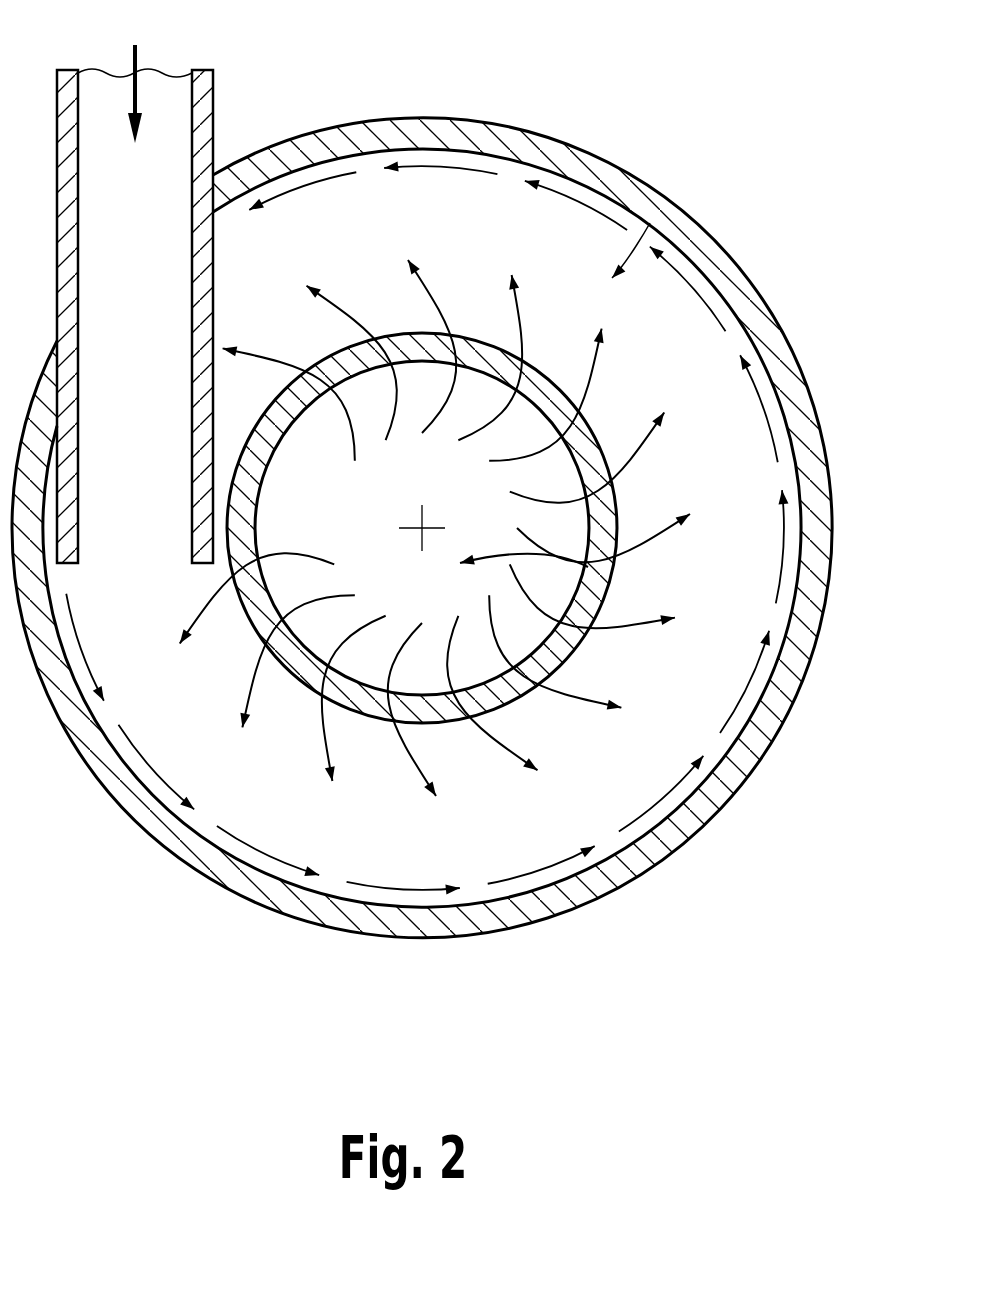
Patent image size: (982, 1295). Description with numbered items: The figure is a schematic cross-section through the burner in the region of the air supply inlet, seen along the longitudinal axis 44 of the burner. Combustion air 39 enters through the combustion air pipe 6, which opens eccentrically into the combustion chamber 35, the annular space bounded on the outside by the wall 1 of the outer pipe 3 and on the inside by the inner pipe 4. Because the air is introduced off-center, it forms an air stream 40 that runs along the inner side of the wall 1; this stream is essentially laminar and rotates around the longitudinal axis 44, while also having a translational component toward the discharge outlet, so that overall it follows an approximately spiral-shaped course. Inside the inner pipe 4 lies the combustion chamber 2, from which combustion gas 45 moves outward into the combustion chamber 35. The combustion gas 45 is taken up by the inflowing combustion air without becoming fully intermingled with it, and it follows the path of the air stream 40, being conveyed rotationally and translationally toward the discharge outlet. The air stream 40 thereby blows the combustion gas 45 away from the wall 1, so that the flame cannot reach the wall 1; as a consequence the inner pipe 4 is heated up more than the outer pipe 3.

The wall 1 is at (430, 514).
The combustion chamber 2 is at (447, 492).
The outer pipe 3 is at (558, 143).
The inner pipe 4 is at (480, 360).
The combustion air pipe 6 is at (203, 133).
The combustion chamber 35 is at (650, 223).
The combustion air 39 is at (128, 62).
The air stream 40 is at (770, 414).
The longitudinal axis 44 is at (422, 528).
The combustion gas 45 is at (627, 633).